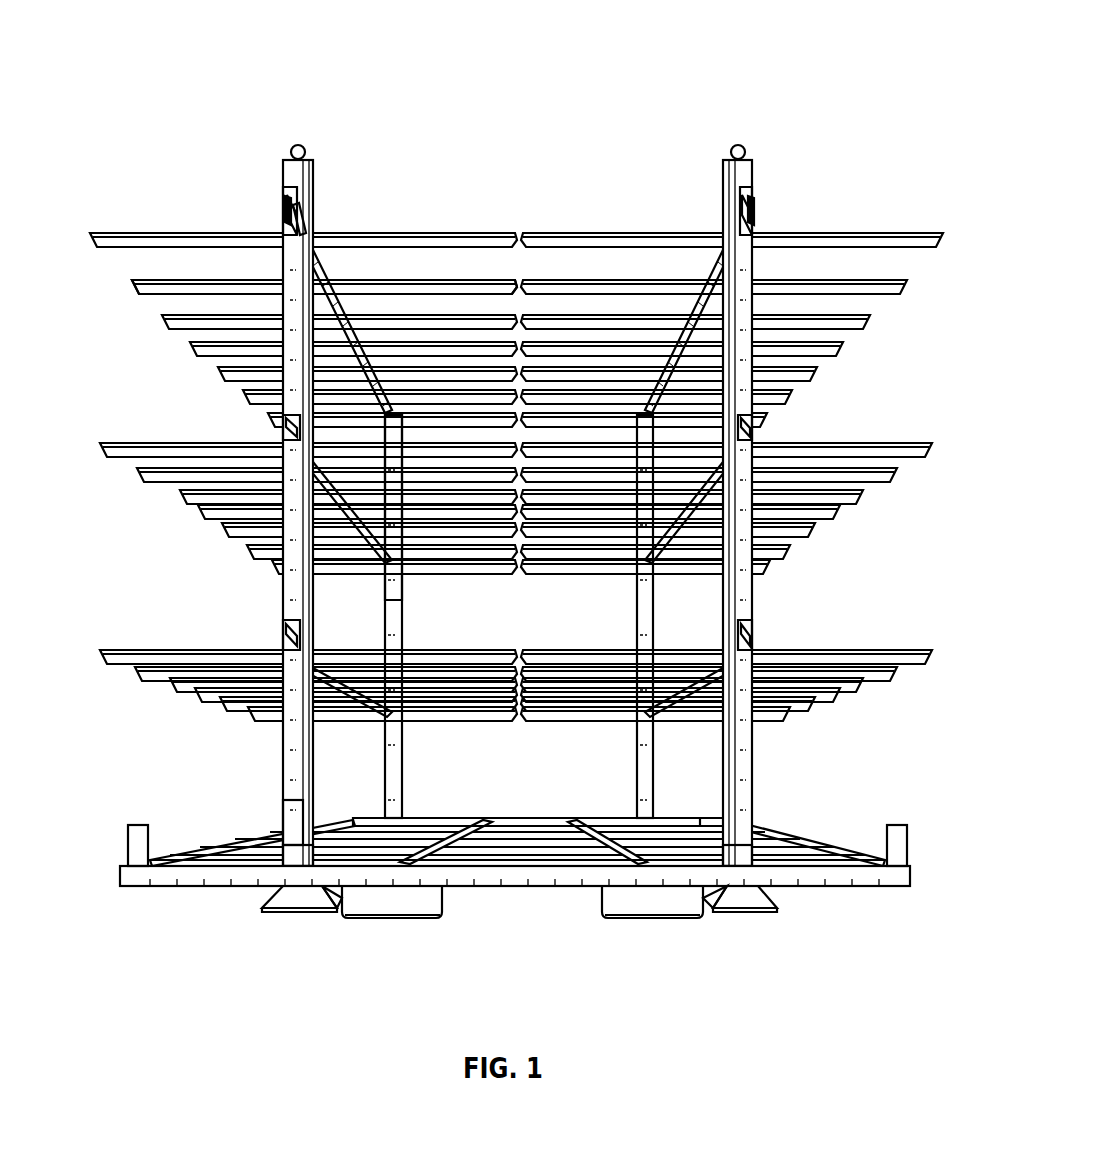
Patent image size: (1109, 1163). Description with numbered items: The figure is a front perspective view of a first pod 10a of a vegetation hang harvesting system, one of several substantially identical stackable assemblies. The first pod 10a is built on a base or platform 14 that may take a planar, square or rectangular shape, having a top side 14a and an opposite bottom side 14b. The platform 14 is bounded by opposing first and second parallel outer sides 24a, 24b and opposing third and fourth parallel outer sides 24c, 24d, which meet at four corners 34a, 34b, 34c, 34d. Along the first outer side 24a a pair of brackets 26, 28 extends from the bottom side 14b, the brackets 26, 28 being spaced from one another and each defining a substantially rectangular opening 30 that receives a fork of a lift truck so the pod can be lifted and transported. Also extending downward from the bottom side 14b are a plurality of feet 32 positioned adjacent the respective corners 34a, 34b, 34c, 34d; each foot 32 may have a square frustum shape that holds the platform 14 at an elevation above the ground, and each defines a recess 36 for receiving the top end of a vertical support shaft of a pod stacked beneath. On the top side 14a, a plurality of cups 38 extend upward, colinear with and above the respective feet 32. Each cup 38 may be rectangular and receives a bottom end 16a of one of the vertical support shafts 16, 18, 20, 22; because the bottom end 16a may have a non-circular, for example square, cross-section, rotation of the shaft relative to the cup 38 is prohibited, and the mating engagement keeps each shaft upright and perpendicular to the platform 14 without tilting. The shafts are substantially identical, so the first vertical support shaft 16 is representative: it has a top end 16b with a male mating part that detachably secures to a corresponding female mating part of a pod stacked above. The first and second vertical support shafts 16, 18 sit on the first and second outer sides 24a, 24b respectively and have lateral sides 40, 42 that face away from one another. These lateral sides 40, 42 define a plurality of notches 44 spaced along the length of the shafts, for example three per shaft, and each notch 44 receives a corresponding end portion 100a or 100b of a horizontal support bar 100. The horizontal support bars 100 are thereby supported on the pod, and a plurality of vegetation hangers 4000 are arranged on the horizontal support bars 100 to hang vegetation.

The first pod 10a is at (852, 62).
The top end 16b is at (298, 146).
The notches 44 is at (284, 187).
The horizontal support bar 100 is at (282, 200).
The end portion 100a is at (293, 217).
The end portion 100b is at (395, 410).
The lateral side 40 is at (283, 283).
The first vertical support shaft 16 is at (287, 332).
The vegetation hangers 4000 is at (906, 236).
The third vertical support shaft 20 is at (755, 365).
The lateral side 42 is at (385, 582).
The second vertical support shaft 18 is at (406, 624).
The fourth vertical support shaft 22 is at (631, 624).
The fourth corner 34d is at (355, 822).
The fourth outer side 24d is at (195, 852).
The bottom end 16a is at (286, 804).
The cups 38 is at (283, 840).
The first corner 34a is at (122, 878).
The second outer side 24b is at (433, 823).
The platform 14 is at (522, 836).
The top side 14a is at (557, 852).
The third corner 34c is at (720, 824).
The third outer side 24c is at (815, 854).
The bottom side 14b is at (522, 888).
The bracket 26 is at (388, 918).
The rectangular opening 30 is at (410, 898).
The bracket 28 is at (655, 918).
The recess 36 is at (290, 913).
The feet 32 is at (275, 911).
The first outer side 24a is at (825, 888).
The second corner 34b is at (890, 888).